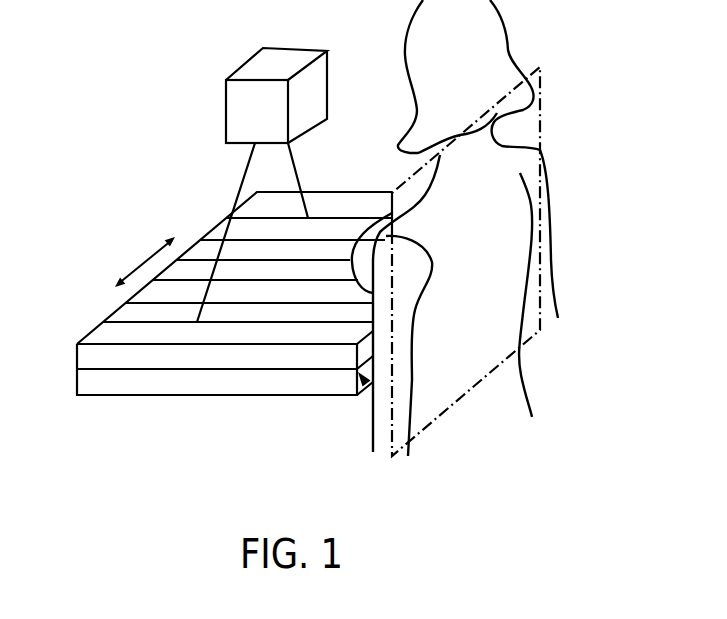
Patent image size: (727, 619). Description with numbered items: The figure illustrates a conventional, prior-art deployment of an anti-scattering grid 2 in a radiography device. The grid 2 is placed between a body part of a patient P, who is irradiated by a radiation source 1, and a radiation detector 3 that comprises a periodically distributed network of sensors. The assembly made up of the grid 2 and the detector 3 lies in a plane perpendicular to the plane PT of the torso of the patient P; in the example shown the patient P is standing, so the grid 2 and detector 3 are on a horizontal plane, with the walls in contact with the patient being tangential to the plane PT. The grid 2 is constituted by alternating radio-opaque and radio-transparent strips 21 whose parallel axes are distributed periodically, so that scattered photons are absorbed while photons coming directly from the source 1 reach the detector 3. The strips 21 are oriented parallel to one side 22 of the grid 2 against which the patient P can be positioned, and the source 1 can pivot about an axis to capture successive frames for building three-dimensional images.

The radiation source 1 is at (330, 80).
The anti-scattering grid 2 is at (215, 223).
The strips 21 is at (127, 308).
The side of the grid 22 is at (366, 384).
The radiation detector 3 is at (218, 397).
The patient P is at (508, 23).
The plane of the torso of the patient PT is at (545, 128).